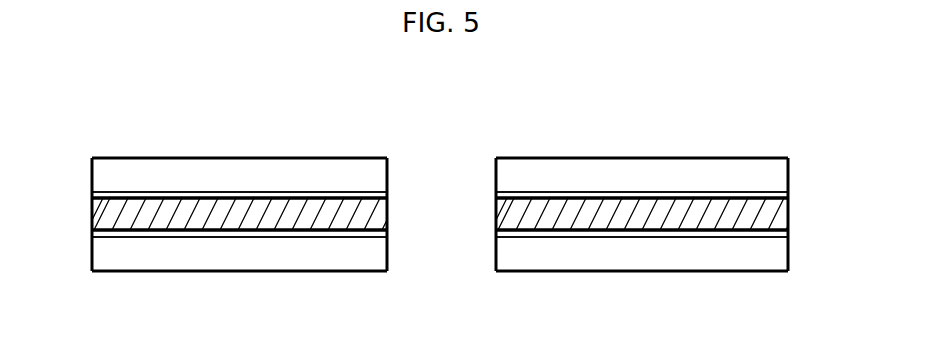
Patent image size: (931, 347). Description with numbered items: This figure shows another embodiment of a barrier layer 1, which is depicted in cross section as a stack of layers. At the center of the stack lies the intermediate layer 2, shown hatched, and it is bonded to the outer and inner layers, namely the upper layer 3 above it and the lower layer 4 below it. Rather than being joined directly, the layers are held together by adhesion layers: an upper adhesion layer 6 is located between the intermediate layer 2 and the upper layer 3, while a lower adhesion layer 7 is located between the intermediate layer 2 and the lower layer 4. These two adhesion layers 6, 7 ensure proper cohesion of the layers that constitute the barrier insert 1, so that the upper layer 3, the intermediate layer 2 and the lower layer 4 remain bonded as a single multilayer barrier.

The barrier layer 1 is at (443, 95).
The intermediate layer 2 is at (252, 210).
The upper layer 3 is at (205, 173).
The lower layer 4 is at (203, 257).
The upper adhesion layer 6 is at (113, 192).
The lower adhesion layer 7 is at (112, 235).